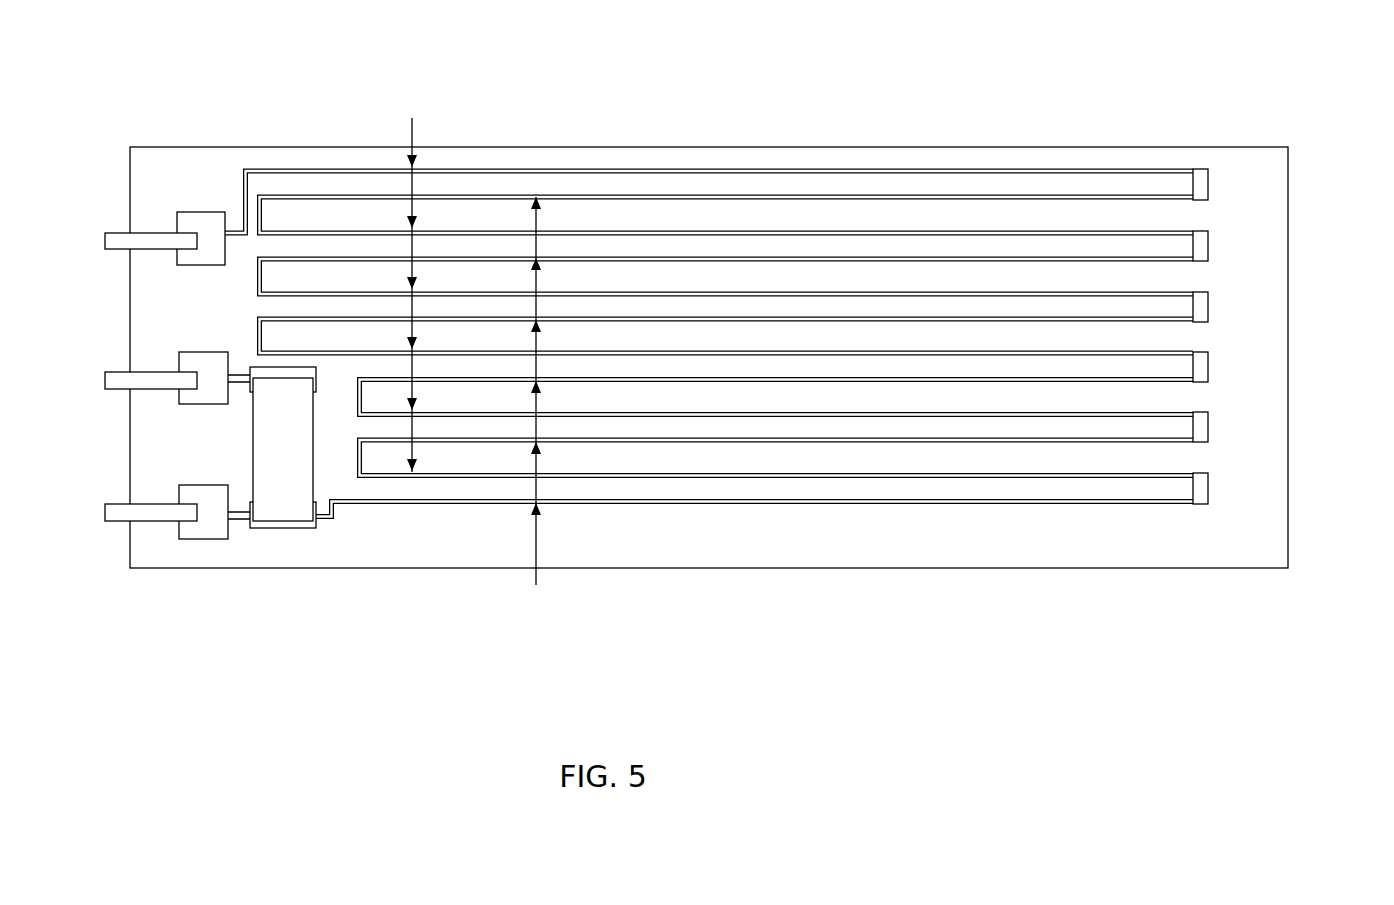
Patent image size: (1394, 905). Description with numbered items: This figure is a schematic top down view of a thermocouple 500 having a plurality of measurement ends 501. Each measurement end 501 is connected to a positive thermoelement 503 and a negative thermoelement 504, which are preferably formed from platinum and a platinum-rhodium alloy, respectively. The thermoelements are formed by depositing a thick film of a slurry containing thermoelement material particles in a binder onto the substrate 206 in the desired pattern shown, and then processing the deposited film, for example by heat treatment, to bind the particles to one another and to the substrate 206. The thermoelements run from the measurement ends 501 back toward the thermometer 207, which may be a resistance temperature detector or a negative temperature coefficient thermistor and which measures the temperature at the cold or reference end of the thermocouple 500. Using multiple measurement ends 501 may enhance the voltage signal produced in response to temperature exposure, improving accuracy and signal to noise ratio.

The thermocouple 500 is at (747, 352).
The measurement end 501 is at (1203, 292).
The positive thermoelement 503 is at (417, 281).
The negative thermoelement 504 is at (551, 407).
The substrate 206 is at (796, 535).
The thermometer 207 is at (274, 493).